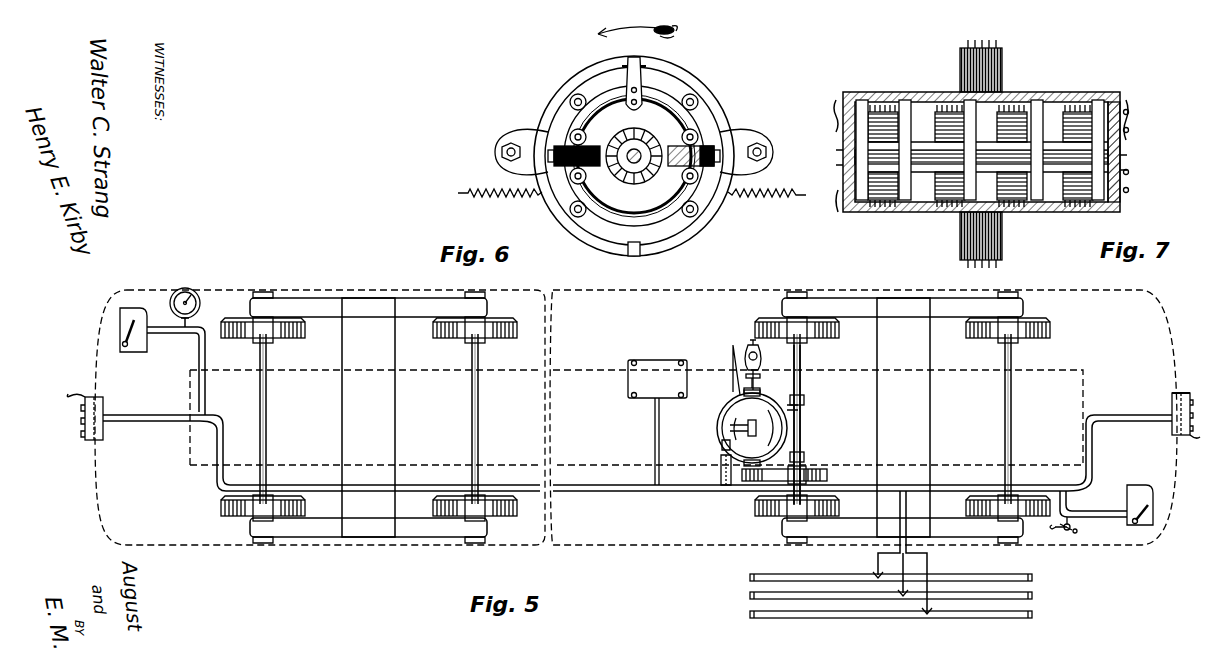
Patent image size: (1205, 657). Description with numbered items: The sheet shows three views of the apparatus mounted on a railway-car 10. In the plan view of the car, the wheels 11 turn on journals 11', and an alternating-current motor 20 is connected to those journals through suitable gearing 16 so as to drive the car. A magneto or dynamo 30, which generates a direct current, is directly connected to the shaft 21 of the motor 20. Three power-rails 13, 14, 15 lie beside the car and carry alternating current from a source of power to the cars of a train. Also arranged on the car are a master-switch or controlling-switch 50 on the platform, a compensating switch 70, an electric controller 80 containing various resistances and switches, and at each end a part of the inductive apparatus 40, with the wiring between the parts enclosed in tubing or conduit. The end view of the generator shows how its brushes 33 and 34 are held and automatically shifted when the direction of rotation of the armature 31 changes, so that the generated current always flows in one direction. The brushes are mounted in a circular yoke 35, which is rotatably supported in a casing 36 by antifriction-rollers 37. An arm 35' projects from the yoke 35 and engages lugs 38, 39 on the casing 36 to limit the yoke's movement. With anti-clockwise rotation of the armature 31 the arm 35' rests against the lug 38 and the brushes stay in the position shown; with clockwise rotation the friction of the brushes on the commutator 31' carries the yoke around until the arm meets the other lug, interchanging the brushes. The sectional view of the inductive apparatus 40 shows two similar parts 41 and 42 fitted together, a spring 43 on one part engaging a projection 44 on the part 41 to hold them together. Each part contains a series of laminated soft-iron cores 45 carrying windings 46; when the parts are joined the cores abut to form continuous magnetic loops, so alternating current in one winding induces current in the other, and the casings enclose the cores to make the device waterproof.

In FIG. 5, the railway-car 10 is at (734, 293).
In FIG. 5, the wheels 11 is at (635, 425).
In FIG. 5, the journals 11' is at (816, 425).
In FIG. 5, the power-rail 13 is at (1032, 578).
In FIG. 5, the power-rail 14 is at (1032, 596).
In FIG. 5, the power-rail 15 is at (1032, 615).
In FIG. 5, the gearing 16 is at (770, 478).
In FIG. 5, the alternating-current motor 20 is at (737, 406).
In FIG. 5, the shaft of the motor 21 is at (760, 392).
In FIG. 5, the magneto or dynamo 30 is at (760, 352).
In FIG. 6, the armature 31 is at (639, 141).
In FIG. 6, the commutator 31' is at (628, 185).
In FIG. 6, the brush 33 is at (566, 140).
In FIG. 6, the brush 34 is at (706, 142).
In FIG. 6, the circular yoke 35 is at (634, 168).
In FIG. 6, the arm 35' is at (654, 55).
In FIG. 6, the casing 36 is at (718, 205).
In FIG. 6, the antifriction-rollers 37 is at (697, 97).
In FIG. 6, the lug 38 is at (626, 64).
In FIG. 6, the lug 39 is at (636, 249).
In FIG. 7, the inductive apparatus 40 is at (947, 66).
In FIG. 5, the part of the inductive apparatus 41 is at (1170, 403).
In FIG. 7, the part of the inductive apparatus 41 is at (1114, 96).
In FIG. 5, the part of the inductive apparatus 42 is at (103, 436).
In FIG. 7, the part of the inductive apparatus 42 is at (845, 202).
In FIG. 5, the spring 43 is at (96, 398).
In FIG. 7, the spring 43 is at (843, 157).
In FIG. 5, the projection 44 is at (1176, 393).
In FIG. 7, the projection 44 is at (843, 122).
In FIG. 7, the cores 45 is at (861, 110).
In FIG. 7, the windings 46 is at (883, 110).
In FIG. 5, the master-switch or controlling-switch 50 is at (136, 348).
In FIG. 5, the compensating switch 70 is at (201, 303).
In FIG. 5, the electric controller 80 is at (627, 378).